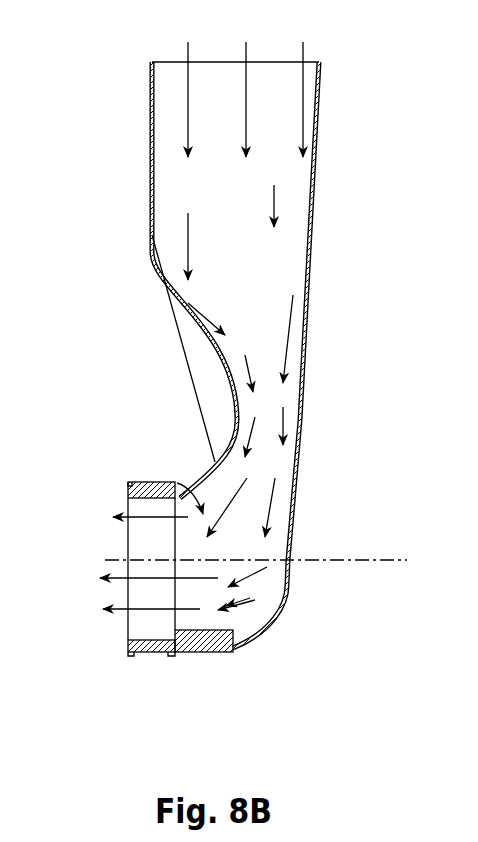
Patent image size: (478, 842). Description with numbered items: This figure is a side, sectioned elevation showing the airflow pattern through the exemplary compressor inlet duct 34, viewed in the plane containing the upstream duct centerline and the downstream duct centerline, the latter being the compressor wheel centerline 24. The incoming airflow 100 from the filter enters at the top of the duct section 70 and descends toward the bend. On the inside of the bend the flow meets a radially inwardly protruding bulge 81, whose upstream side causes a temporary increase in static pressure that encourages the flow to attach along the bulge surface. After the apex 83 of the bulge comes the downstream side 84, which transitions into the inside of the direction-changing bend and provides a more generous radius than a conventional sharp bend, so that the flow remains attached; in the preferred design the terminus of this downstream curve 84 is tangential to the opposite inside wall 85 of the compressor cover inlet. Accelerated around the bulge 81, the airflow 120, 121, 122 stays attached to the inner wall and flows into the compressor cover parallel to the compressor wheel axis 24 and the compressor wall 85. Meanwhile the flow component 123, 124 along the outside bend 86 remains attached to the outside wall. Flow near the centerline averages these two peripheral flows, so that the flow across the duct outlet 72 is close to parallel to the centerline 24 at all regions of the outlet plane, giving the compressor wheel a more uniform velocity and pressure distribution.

The compressor wheel centerline 24 is at (350, 560).
The compressor inlet duct 34 is at (152, 235).
The inlet duct 70 is at (157, 63).
The duct outlet 72 is at (185, 578).
The inward bulge 81 is at (223, 353).
The apex of the bulge 83 is at (235, 415).
The downstream side of the bulge 84 is at (215, 462).
The inside wall of the compressor cover inlet 85 is at (178, 655).
The outside bend 86 is at (265, 625).
The incoming airflow 100 is at (254, 102).
The airflow 120 is at (207, 313).
The airflow 121 is at (265, 415).
The airflow 122 is at (158, 165).
The outside bend flow component 123 is at (278, 492).
The outside bend flow component 124 is at (233, 607).